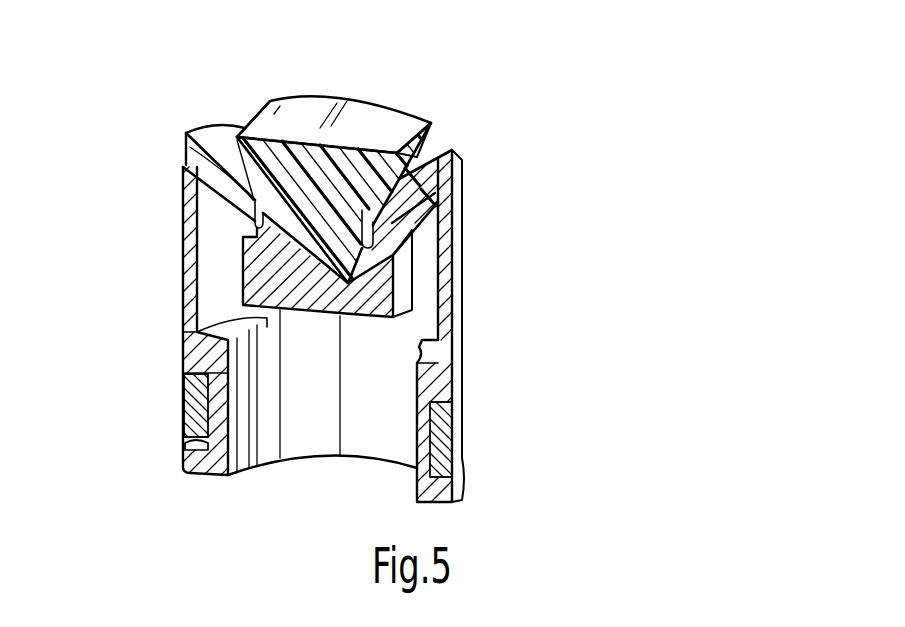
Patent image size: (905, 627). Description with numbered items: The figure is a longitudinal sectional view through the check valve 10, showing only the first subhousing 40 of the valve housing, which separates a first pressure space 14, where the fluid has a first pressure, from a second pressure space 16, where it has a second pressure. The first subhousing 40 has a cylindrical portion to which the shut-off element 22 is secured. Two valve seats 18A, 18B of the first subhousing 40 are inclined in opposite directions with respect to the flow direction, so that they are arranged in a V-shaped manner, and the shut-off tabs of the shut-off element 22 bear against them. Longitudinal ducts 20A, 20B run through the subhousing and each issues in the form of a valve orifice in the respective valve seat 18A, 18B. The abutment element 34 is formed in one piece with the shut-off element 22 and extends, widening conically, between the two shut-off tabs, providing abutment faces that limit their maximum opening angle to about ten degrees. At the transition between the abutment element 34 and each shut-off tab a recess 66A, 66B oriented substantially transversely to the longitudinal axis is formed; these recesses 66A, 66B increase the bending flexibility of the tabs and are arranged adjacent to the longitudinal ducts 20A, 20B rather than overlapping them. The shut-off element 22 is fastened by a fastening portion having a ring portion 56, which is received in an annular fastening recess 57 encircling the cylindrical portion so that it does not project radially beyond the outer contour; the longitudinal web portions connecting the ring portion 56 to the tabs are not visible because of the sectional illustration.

The check valve 10 is at (608, 108).
The first pressure space 14 is at (328, 417).
The second pressure space 16 is at (353, 76).
The valve seat 18A is at (203, 128).
The valve seat 18B is at (455, 180).
The longitudinal duct 20A is at (220, 283).
The longitudinal duct 20B is at (423, 288).
The shut-off element 22 is at (428, 110).
The abutment element 34 is at (378, 120).
The first subhousing 40 is at (182, 256).
The ring portion 56 is at (197, 402).
The annular fastening recess 57 is at (183, 442).
The recess 66A is at (253, 198).
The recess 66B is at (452, 183).